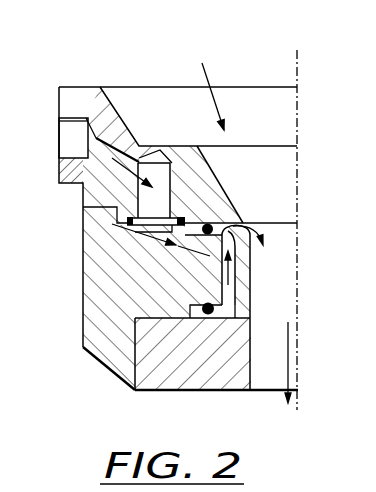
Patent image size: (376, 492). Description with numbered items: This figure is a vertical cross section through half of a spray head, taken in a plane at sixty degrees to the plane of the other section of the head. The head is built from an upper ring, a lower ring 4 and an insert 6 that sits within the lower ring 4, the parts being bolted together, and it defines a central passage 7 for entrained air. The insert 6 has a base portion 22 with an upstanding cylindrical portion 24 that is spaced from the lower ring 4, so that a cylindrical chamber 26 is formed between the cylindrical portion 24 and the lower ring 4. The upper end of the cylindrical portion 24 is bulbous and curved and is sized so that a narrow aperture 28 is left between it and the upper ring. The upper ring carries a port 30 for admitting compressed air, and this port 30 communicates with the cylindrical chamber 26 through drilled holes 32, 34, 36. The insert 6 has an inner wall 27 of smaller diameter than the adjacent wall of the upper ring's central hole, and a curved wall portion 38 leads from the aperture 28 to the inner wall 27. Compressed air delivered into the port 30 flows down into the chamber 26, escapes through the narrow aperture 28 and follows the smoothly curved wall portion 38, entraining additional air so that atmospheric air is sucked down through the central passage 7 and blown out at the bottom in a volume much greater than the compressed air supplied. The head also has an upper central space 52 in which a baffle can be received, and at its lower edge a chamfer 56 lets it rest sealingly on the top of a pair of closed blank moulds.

The lower ring 4 is at (92, 342).
The insert 6 is at (207, 343).
The central passage 7 is at (284, 158).
The base portion 22 is at (148, 392).
The upstanding cylindrical portion 24 is at (251, 303).
The cylindrical chamber 26 is at (236, 297).
The inner wall 27 is at (253, 258).
The narrow aperture 28 is at (186, 219).
The port 30 is at (68, 127).
The drilled hole 32 is at (118, 182).
The drilled hole 34 is at (138, 183).
The drilled hole 36 is at (138, 270).
The curved wall portion 38 is at (288, 222).
The upper central space 52 is at (140, 102).
The chamfer 56 is at (116, 375).